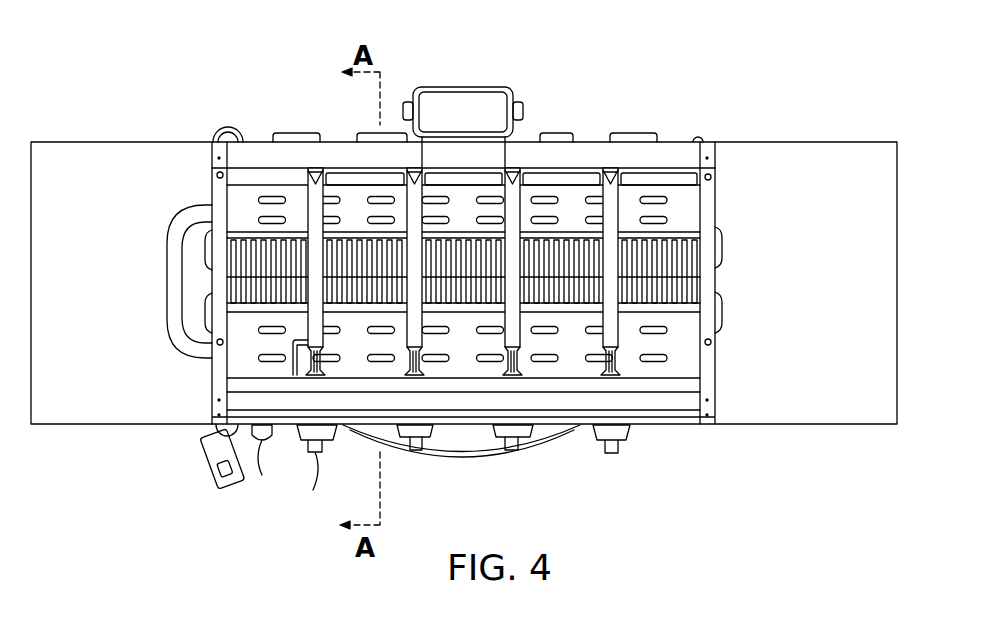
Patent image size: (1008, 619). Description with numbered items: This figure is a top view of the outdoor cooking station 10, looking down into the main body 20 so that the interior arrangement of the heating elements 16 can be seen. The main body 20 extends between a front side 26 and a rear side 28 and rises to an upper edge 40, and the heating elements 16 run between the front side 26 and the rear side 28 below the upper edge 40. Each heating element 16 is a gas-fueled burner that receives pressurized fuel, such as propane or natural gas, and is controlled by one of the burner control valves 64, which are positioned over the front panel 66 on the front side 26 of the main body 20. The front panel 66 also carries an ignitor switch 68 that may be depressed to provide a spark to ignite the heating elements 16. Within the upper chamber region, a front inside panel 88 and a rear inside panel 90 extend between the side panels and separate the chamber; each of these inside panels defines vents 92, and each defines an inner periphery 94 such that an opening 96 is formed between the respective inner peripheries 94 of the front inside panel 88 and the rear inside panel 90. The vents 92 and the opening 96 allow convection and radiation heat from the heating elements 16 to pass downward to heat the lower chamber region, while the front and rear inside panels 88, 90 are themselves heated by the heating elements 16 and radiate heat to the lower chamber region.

The outdoor cooking station 10 is at (792, 100).
The heating elements 16 is at (624, 201).
The main body 20 is at (722, 192).
The front side 26 is at (571, 443).
The rear side 28 is at (589, 133).
The upper edge 40 is at (260, 155).
The burner control valves 64 is at (317, 473).
The front panel 66 is at (657, 428).
The ignitor switch 68 is at (239, 464).
The front inside panel 88 is at (685, 358).
The rear inside panel 90 is at (688, 217).
The vents 92 is at (667, 330).
The inner periphery 94 is at (266, 280).
The opening 96 is at (258, 262).